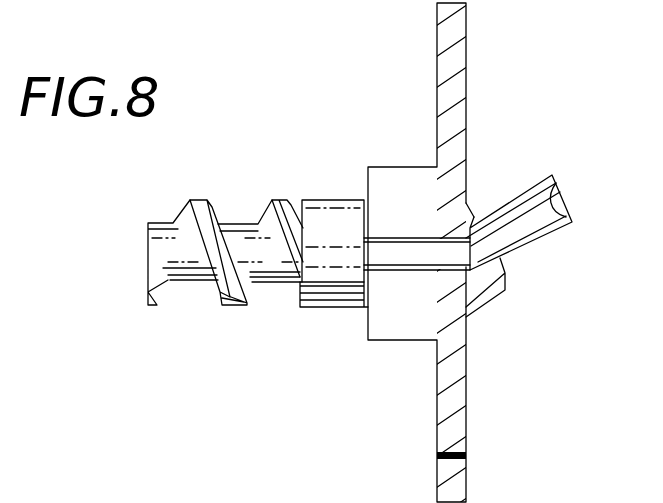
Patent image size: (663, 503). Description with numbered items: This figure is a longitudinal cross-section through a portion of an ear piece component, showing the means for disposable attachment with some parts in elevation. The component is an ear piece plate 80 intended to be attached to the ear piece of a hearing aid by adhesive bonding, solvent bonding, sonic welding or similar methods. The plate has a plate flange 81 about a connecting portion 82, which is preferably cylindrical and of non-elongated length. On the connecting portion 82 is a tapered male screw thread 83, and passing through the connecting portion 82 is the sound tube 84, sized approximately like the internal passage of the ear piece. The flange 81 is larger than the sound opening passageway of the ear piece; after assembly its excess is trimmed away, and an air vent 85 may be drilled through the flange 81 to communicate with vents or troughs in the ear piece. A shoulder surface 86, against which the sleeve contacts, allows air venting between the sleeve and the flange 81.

The ear piece plate 80 is at (285, 113).
The plate flange 81 is at (437, 39).
The connecting portion 82 is at (332, 199).
The male screw thread 83 is at (222, 292).
The sound tube 84 is at (563, 194).
The air vent 85 is at (466, 458).
The shoulder surface 86 is at (300, 297).